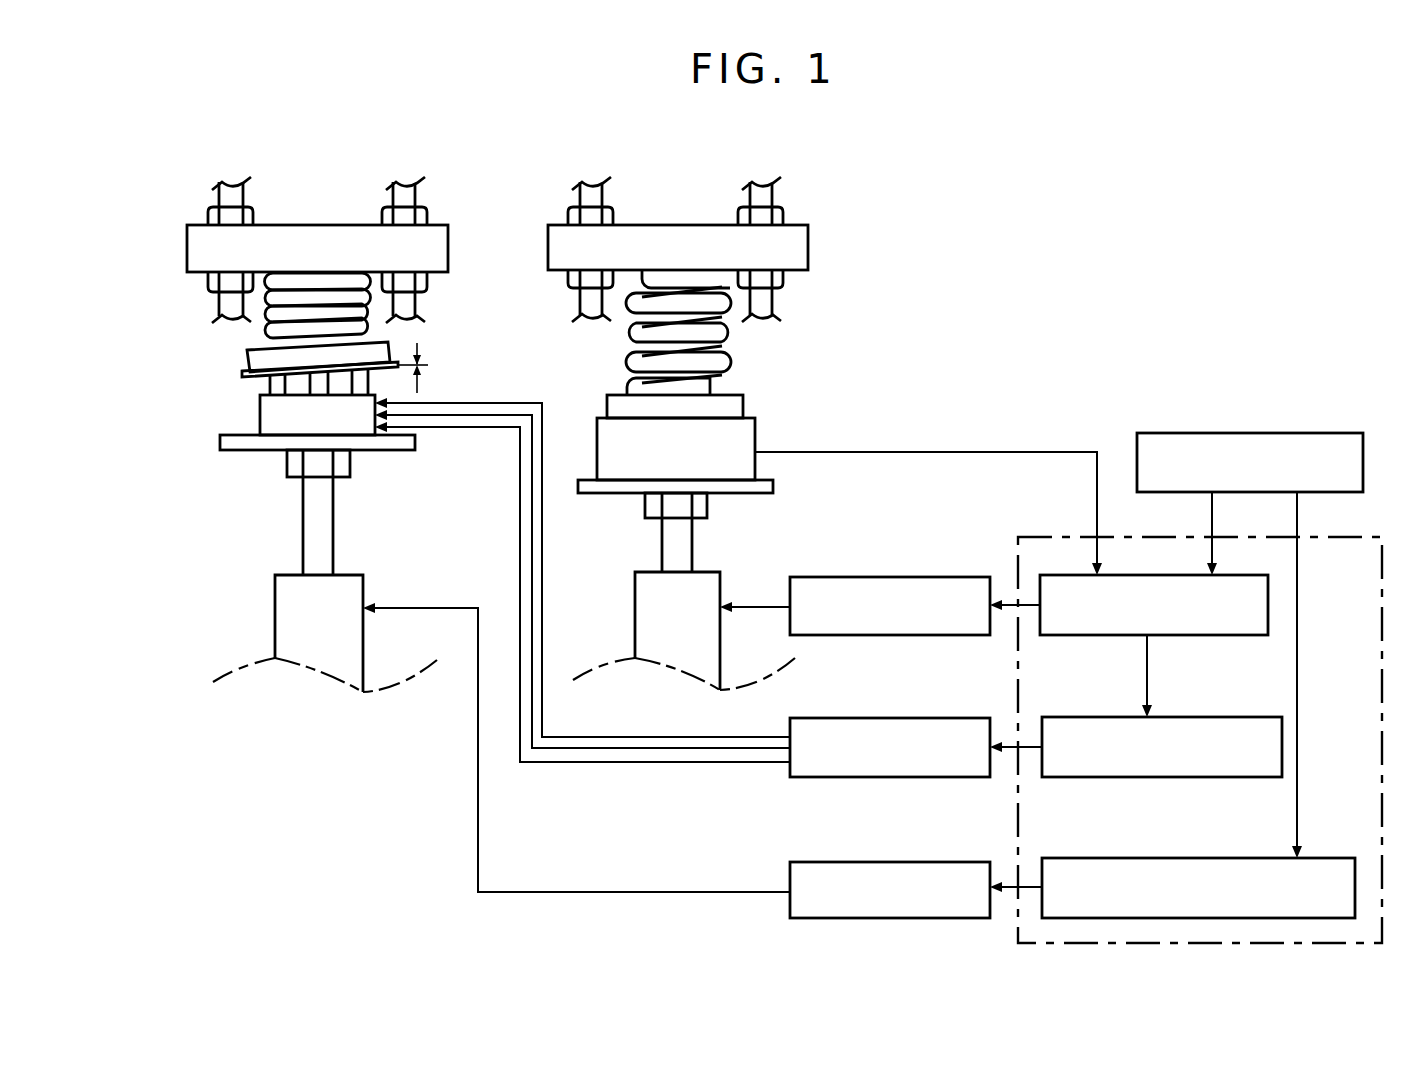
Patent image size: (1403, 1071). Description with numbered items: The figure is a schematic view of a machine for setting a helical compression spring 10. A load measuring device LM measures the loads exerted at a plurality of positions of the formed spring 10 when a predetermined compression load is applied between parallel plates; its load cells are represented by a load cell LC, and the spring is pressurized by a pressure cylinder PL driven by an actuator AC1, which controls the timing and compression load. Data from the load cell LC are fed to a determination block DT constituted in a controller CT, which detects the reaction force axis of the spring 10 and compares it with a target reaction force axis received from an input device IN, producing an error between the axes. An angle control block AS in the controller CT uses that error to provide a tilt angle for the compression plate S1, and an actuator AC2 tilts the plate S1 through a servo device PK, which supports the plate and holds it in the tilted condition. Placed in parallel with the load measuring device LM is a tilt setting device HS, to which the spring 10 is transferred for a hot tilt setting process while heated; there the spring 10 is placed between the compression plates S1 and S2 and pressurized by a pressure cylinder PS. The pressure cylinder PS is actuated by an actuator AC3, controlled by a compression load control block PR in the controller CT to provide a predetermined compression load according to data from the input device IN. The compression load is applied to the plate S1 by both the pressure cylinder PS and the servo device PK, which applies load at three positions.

The compression plate S2 is at (430, 253).
The helical compression spring 10 is at (362, 327).
The compression plate S1 is at (257, 357).
The servo device PK is at (273, 415).
The pressure cylinder PS is at (285, 617).
The tilt setting device HS is at (270, 708).
The load measuring device LM is at (822, 285).
The load cell LC is at (740, 437).
The pressure cylinder PL is at (643, 615).
The actuator AC1 is at (845, 575).
The actuator AC2 is at (845, 717).
The actuator AC3 is at (843, 860).
The controller CT is at (1053, 535).
The determination block DT is at (1207, 635).
The angle control block AS is at (1208, 777).
The compression load control block PR is at (1093, 858).
The input device IN is at (1283, 433).